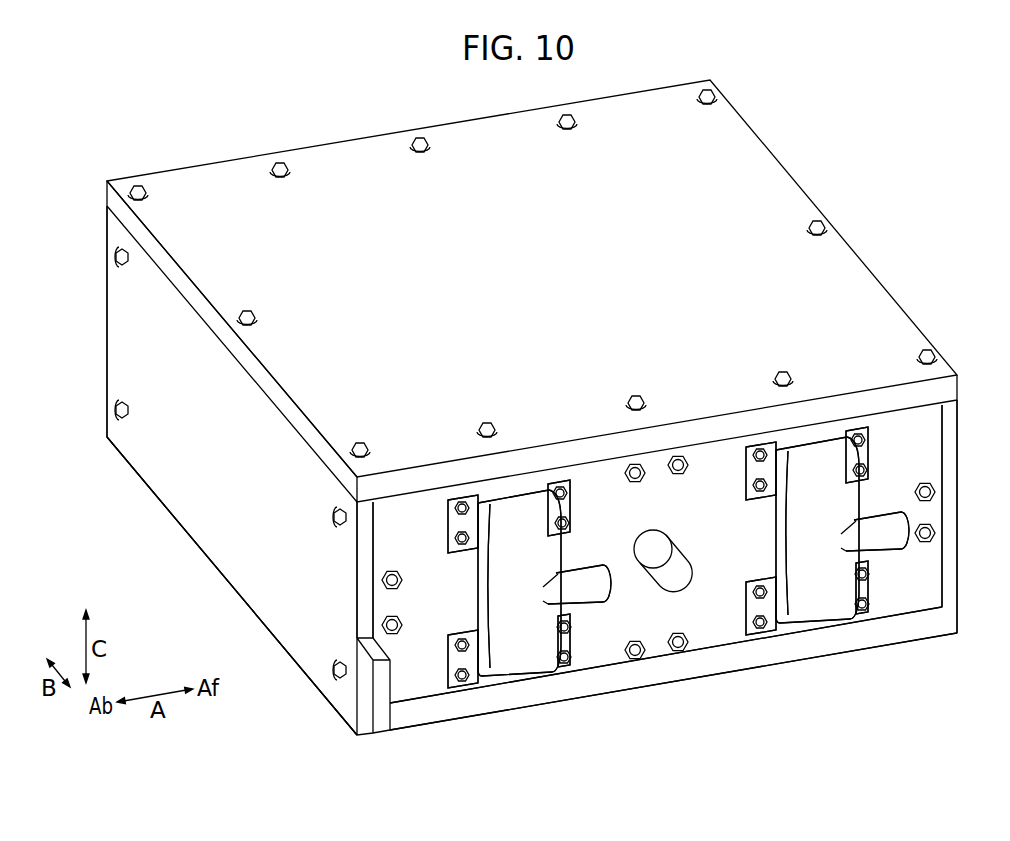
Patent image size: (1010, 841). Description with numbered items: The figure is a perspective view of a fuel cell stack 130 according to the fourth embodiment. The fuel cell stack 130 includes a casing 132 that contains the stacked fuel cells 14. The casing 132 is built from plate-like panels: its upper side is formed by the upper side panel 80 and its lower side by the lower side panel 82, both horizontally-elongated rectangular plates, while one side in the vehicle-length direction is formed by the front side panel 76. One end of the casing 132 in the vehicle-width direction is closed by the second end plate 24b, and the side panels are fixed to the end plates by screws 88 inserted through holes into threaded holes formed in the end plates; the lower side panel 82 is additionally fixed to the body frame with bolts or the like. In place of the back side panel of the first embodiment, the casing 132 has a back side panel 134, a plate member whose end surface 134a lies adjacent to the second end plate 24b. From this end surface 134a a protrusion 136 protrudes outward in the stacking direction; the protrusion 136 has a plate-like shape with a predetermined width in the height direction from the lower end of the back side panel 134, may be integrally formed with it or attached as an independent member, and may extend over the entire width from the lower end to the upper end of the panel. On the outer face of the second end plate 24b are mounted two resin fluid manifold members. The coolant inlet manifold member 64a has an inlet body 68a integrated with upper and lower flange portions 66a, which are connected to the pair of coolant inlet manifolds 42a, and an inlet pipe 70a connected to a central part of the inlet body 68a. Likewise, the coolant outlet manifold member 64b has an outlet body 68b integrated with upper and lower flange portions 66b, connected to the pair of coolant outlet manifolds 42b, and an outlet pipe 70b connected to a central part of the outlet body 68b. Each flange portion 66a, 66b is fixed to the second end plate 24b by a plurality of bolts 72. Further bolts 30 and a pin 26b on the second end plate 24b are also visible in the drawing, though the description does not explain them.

The fuel cell 14 is at (787, 210).
The upper side panel 80 is at (837, 267).
The fuel cell stack 130 is at (398, 106).
The casing 132 is at (805, 170).
The screw 88 is at (568, 133).
The front side panel 76 is at (950, 425).
The second end plate 24b is at (913, 610).
The back side panel 134 is at (278, 583).
The end surface 134a is at (363, 543).
The lower side panel 82 is at (332, 697).
The protrusion 136 is at (387, 675).
The fastening bolt 30 is at (383, 613).
The positioning pin 26b is at (680, 580).
The coolant inlet manifold 42a is at (472, 515).
The coolant outlet manifold 42b is at (793, 468).
The coolant inlet manifold member 64a is at (538, 657).
The coolant outlet manifold member 64b is at (836, 607).
The flange portion 66a is at (477, 637).
The flange portion 66b is at (847, 470).
The inlet body 68a is at (527, 518).
The outlet body 68b is at (823, 470).
The inlet pipe 70a is at (587, 578).
The outlet pipe 70b is at (897, 538).
The bolt 72 is at (455, 497).